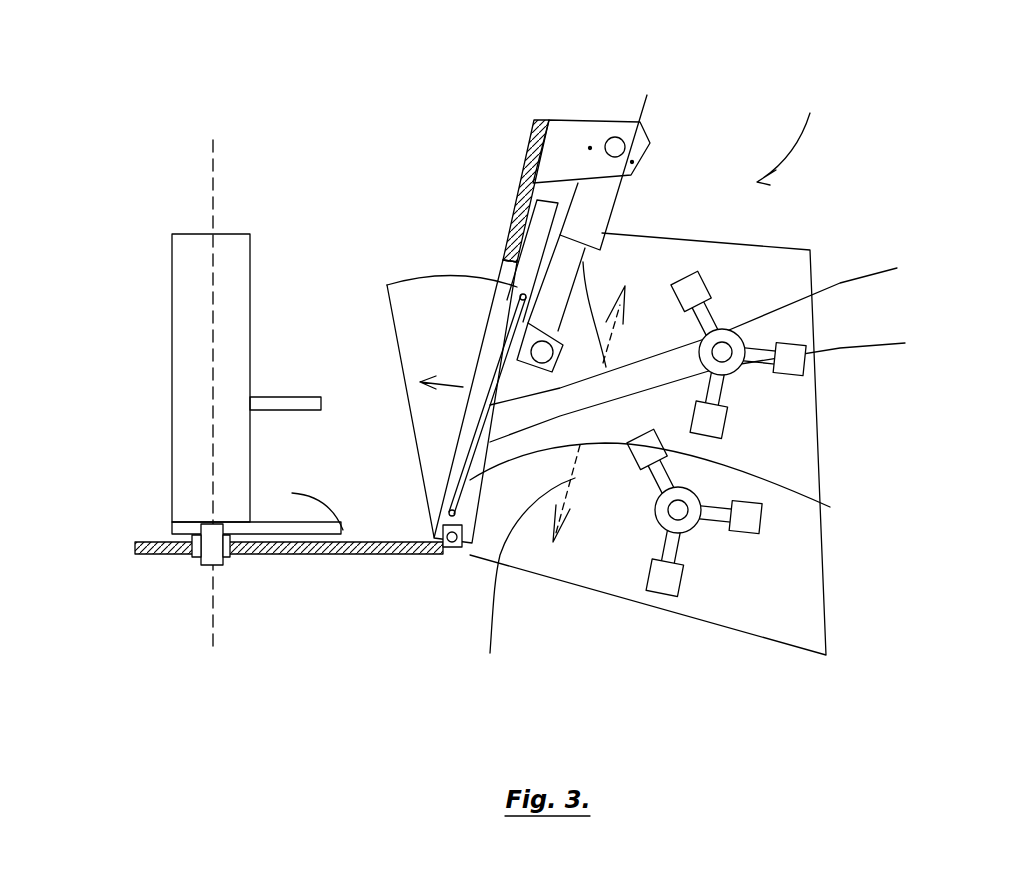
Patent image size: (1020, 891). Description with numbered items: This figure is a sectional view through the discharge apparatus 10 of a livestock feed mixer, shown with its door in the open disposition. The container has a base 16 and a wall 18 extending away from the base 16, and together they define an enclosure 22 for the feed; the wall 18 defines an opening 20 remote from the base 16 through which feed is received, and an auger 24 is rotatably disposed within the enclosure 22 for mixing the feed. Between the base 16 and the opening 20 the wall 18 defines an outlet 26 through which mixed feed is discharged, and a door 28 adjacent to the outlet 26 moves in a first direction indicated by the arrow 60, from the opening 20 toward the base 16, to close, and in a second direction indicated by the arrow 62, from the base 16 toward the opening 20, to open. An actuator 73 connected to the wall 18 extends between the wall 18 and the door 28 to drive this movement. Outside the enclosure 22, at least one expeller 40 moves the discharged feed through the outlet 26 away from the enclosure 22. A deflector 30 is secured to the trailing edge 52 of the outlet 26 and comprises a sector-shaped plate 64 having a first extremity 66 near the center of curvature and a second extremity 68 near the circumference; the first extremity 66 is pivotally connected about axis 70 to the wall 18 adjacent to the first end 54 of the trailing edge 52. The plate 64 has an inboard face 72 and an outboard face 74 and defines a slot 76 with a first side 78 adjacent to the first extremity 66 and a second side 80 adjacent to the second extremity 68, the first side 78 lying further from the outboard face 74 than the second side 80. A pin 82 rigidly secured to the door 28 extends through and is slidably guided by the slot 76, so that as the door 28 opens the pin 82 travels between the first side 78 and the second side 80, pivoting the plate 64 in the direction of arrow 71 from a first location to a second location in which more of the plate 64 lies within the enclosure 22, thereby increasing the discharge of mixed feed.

The discharge apparatus 10 is at (792, 138).
The base 16 is at (342, 554).
The wall 18 is at (513, 220).
The opening 20 is at (537, 118).
The enclosure 22 is at (327, 307).
The auger 24 is at (185, 447).
The outlet 26 is at (482, 350).
The door 28 is at (563, 213).
The deflector 30 is at (363, 253).
The expeller 40 is at (777, 450).
The trailing edge 52 is at (463, 553).
The first end of the trailing edge 54 is at (447, 500).
The arrow 60 is at (531, 565).
The arrow 62 is at (636, 130).
The plate 64 is at (423, 417).
The first extremity 66 is at (432, 540).
The second extremity 68 is at (425, 288).
The axis 70 is at (436, 545).
The arrow 71 is at (450, 388).
The inboard face 72 is at (400, 385).
The actuator 73 is at (602, 233).
The outboard face 74 is at (713, 433).
The slot 76 is at (707, 329).
The first side 78 is at (667, 404).
The second side 80 is at (500, 265).
The pin 82 is at (482, 350).